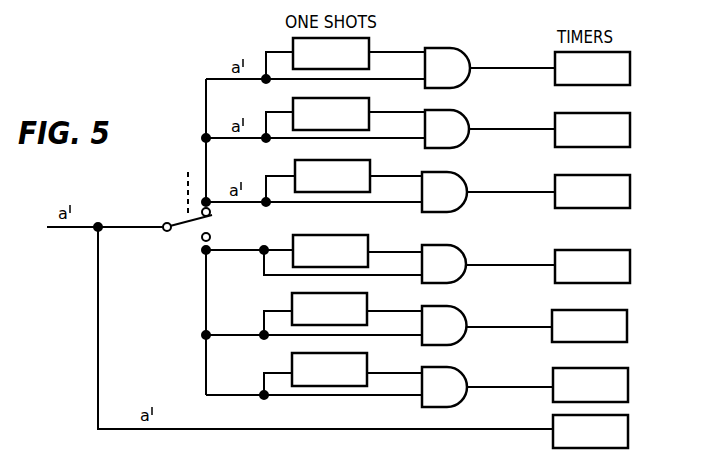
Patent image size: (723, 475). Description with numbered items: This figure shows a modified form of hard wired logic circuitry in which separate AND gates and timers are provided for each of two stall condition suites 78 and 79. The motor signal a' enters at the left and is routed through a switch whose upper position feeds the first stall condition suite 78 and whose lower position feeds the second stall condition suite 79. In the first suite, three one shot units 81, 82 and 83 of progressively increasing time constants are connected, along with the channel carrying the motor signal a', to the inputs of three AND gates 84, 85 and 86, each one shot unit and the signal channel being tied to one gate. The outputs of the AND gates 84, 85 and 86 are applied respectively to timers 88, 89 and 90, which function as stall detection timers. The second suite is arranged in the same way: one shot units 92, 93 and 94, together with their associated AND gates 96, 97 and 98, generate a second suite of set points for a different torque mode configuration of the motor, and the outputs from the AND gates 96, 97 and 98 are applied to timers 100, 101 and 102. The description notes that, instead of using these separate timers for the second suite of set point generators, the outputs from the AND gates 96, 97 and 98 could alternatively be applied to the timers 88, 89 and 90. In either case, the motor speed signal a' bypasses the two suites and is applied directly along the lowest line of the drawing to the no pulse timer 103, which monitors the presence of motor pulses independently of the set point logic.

The stall condition suite 78 is at (181, 143).
The stall condition suite 79 is at (178, 342).
The one shot unit 81 is at (369, 41).
The one shot unit 82 is at (369, 101).
The one shot unit 83 is at (370, 163).
The AND gate 84 is at (455, 48).
The AND gate 85 is at (455, 110).
The AND gate 86 is at (455, 172).
The timer 88 is at (630, 59).
The timer 89 is at (630, 120).
The timer 90 is at (630, 182).
The one shot unit 92 is at (368, 237).
The one shot unit 93 is at (367, 296).
The one shot unit 94 is at (367, 356).
The AND gate 96 is at (455, 245).
The AND gate 97 is at (455, 306).
The AND gate 98 is at (455, 367).
The timer 100 is at (630, 257).
The timer 101 is at (627, 316).
The timer 102 is at (648, 371).
The no pulse timer 103 is at (628, 428).